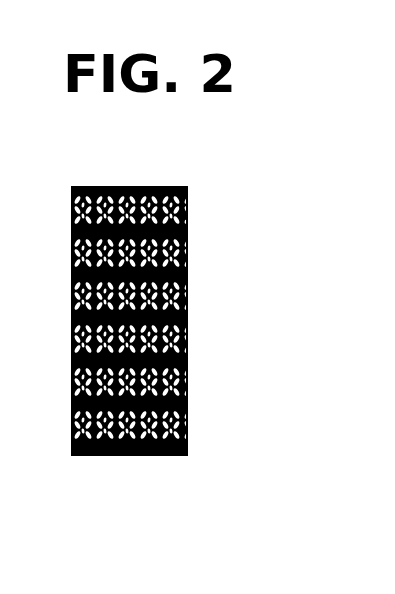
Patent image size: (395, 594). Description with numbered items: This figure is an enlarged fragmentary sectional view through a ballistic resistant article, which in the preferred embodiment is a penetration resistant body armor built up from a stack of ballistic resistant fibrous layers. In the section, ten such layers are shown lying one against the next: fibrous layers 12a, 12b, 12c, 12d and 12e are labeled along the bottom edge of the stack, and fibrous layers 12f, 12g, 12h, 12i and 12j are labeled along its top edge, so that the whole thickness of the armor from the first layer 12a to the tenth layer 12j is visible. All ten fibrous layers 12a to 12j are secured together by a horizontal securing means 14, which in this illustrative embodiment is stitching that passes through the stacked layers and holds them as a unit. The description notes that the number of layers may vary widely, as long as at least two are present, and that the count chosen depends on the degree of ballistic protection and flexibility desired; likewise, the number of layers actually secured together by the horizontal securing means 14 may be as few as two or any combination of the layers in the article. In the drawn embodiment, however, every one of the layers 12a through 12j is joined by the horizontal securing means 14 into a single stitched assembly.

The fibrous layer 12a is at (80, 444).
The fibrous layer 12b is at (88, 457).
The fibrous layer 12c is at (97, 457).
The fibrous layer 12d is at (100, 457).
The fibrous layer 12e is at (123, 457).
The fibrous layer 12f is at (130, 188).
The fibrous layer 12g is at (140, 188).
The fibrous layer 12h is at (148, 188).
The fibrous layer 12i is at (158, 188).
The fibrous layer 12j is at (187, 213).
The horizontal securing means 14 is at (190, 333).